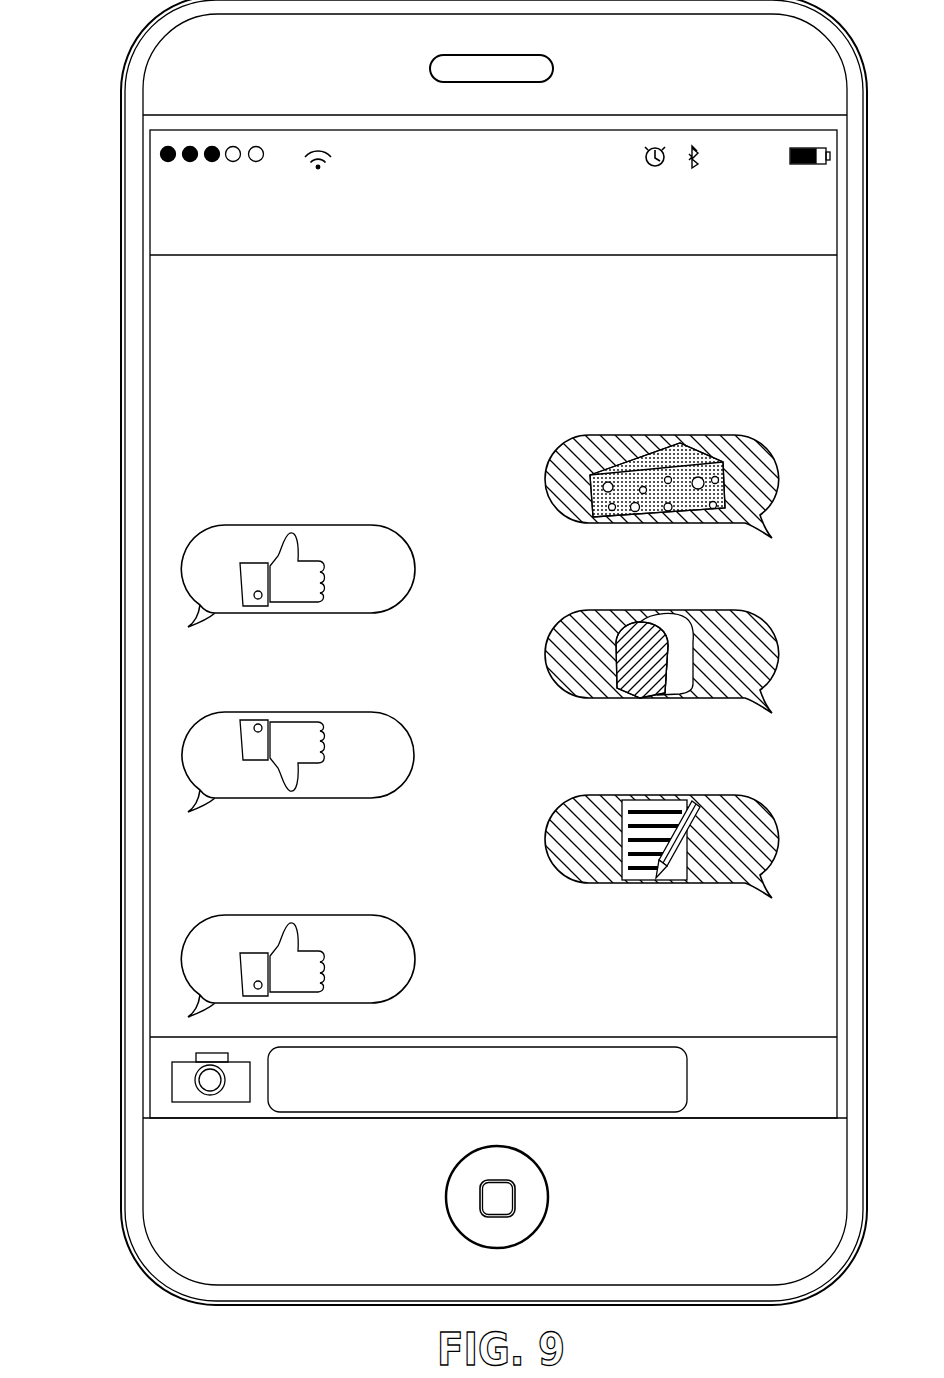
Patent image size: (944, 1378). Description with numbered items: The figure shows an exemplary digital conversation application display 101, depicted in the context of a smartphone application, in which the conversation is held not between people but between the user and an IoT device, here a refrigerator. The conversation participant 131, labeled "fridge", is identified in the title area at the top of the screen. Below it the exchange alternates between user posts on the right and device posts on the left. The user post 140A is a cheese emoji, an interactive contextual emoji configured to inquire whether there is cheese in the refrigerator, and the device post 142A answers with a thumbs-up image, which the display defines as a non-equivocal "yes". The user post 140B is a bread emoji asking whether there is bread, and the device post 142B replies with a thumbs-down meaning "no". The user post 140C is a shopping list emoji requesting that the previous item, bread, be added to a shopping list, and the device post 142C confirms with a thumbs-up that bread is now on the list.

The digital conversation application display 101 is at (112, 58).
The conversation participant 131 is at (530, 213).
The user post 140A is at (712, 435).
The user post 140B is at (712, 610).
The user post 140C is at (712, 795).
The device post 142A is at (265, 525).
The device post 142B is at (265, 712).
The device post 142C is at (265, 915).